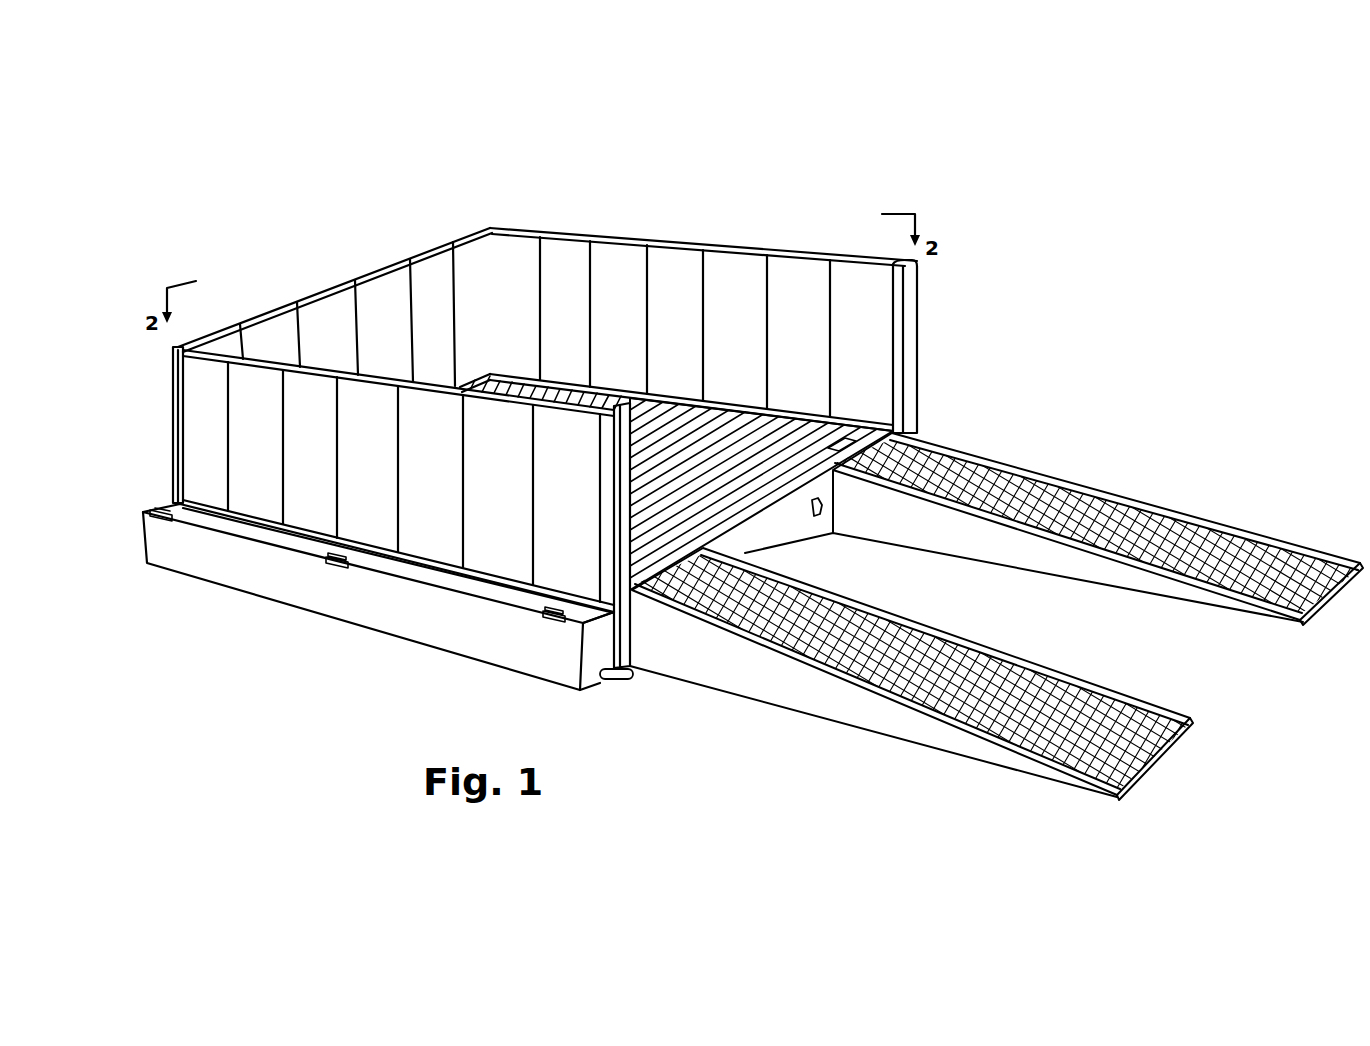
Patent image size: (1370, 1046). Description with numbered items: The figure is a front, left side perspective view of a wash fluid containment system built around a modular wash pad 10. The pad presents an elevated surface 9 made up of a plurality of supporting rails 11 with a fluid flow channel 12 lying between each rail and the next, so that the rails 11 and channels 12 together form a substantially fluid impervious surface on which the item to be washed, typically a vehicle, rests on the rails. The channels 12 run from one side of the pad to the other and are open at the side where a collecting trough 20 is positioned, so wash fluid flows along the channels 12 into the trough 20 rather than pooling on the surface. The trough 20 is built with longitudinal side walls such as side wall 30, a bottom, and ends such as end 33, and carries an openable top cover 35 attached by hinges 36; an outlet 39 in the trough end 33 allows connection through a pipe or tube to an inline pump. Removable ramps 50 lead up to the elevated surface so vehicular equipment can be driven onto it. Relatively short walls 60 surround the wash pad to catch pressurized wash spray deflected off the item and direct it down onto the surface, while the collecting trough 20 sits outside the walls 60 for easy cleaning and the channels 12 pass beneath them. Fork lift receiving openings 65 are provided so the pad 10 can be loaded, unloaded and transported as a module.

The elevated surface 9 is at (880, 418).
The wash pad 10 is at (436, 668).
The supporting rails 11 is at (648, 415).
The fluid flow channels 12 is at (752, 425).
The collecting trough 20 is at (548, 673).
The longitudinal side wall 30 is at (297, 597).
The trough end 33 is at (597, 655).
The openable top cover 35 is at (256, 533).
The hinges 36 is at (343, 570).
The outlet 39 is at (605, 685).
The removable ramps 50 is at (1018, 550).
The walls 60 is at (437, 265).
The fork lift receiving openings 65 is at (735, 550).